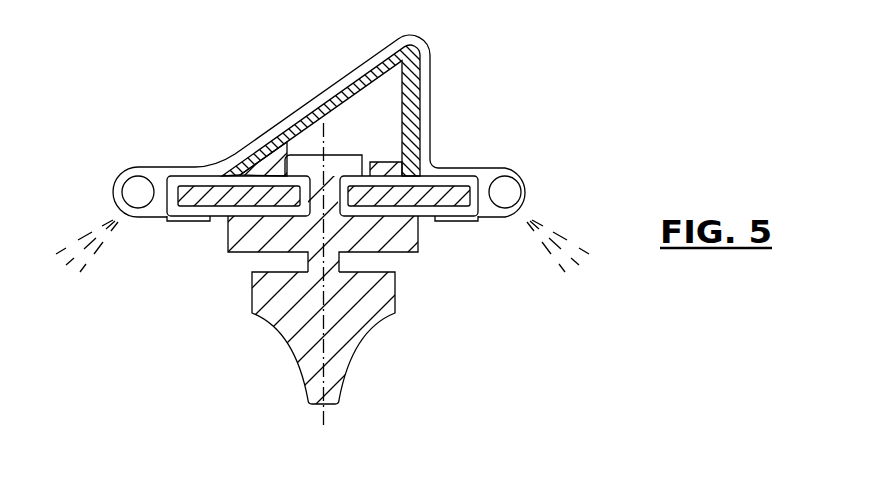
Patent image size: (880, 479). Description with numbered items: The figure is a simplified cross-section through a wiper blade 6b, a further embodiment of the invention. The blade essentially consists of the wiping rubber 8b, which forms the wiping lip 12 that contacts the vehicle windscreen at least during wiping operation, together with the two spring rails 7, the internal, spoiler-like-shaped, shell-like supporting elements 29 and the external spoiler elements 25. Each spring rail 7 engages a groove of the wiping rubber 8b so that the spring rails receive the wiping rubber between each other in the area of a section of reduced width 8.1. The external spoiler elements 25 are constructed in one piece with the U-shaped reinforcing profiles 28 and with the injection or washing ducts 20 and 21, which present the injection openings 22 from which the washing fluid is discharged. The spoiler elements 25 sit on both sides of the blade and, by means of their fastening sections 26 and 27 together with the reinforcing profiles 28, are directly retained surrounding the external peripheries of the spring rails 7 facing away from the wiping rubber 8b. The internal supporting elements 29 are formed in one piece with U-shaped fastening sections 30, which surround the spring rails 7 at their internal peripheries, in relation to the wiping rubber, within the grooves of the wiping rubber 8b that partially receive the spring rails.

The wiper blade 6b is at (443, 101).
The spring rail 7 is at (207, 176).
The section of reduced width 8.1 is at (322, 190).
The wiping rubber 8b is at (382, 330).
The wiping lip 12 is at (318, 393).
The injection or washing duct 20 is at (135, 193).
The injection or washing duct 21 is at (512, 193).
The injection opening 22 is at (125, 212).
The spoiler element 25 is at (343, 79).
The fastening section 26 is at (172, 233).
The fastening section 27 is at (478, 237).
The U-shaped reinforcing profile 28 is at (187, 221).
The supporting element 29 is at (410, 57).
The U-shaped fastening section 30 is at (262, 165).